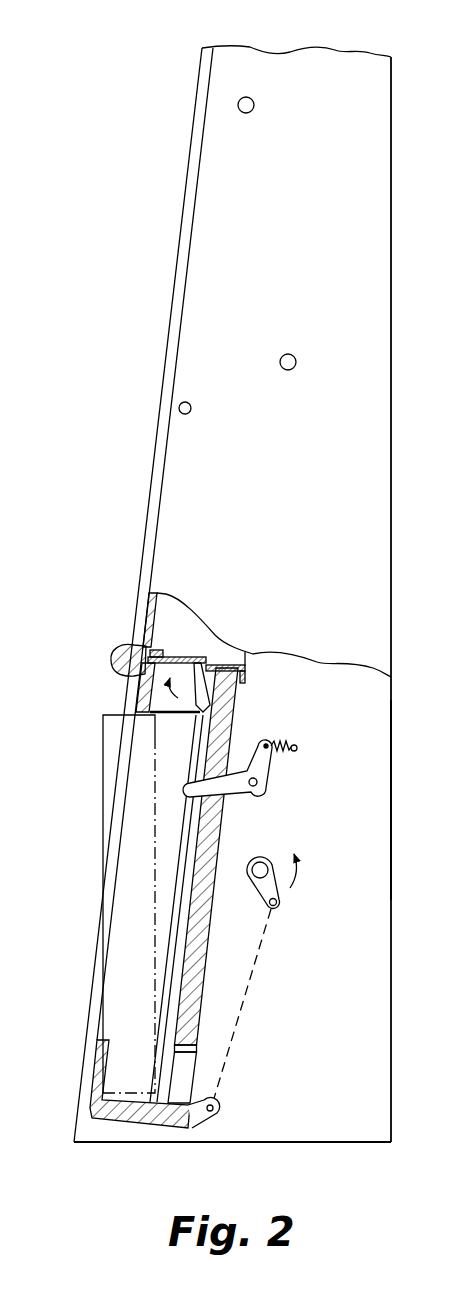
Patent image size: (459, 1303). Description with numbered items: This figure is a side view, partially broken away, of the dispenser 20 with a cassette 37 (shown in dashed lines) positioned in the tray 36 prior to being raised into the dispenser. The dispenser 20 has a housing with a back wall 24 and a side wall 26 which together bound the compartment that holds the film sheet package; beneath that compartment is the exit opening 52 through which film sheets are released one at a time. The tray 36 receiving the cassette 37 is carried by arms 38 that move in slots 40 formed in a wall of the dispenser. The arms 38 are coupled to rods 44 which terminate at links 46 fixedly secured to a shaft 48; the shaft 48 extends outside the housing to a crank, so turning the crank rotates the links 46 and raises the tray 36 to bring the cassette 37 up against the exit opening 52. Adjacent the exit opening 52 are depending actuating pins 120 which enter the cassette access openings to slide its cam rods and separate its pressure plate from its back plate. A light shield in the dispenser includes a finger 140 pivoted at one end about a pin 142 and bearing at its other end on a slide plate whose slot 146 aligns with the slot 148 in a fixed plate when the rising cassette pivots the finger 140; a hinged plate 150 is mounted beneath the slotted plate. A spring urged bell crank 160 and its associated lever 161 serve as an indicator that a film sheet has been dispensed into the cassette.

The dispenser 20 is at (410, 141).
The back wall 24 is at (392, 793).
The side wall 26 is at (336, 1047).
The tray 36 is at (96, 1081).
The film sheet cassette 37 is at (103, 758).
The arms 38 is at (214, 1109).
The slots 40 is at (198, 1053).
The rods 44 is at (266, 976).
The links 46 is at (270, 903).
The shaft 48 is at (260, 870).
The exit opening 52 is at (182, 629).
The actuating pins 120 is at (212, 710).
The finger 140 is at (208, 661).
The pin 142 is at (222, 694).
The slot 146 is at (152, 643).
The slot 148 is at (181, 658).
The hinged plate 150 is at (181, 714).
The spring urged bell crank 160 is at (272, 770).
The lever arm 161 is at (254, 792).